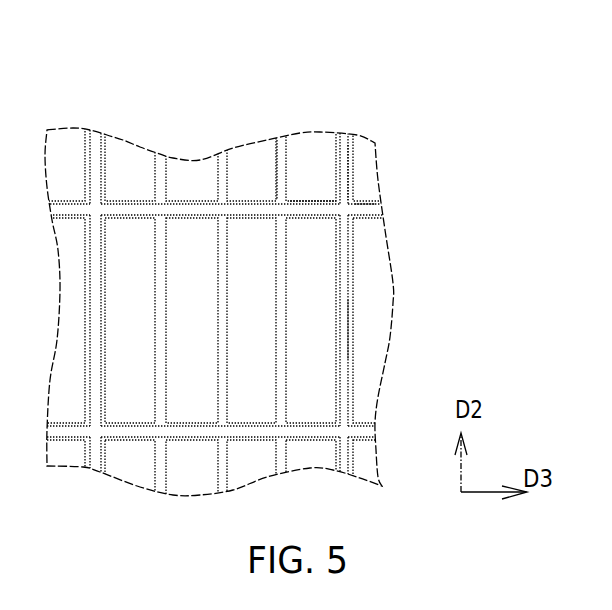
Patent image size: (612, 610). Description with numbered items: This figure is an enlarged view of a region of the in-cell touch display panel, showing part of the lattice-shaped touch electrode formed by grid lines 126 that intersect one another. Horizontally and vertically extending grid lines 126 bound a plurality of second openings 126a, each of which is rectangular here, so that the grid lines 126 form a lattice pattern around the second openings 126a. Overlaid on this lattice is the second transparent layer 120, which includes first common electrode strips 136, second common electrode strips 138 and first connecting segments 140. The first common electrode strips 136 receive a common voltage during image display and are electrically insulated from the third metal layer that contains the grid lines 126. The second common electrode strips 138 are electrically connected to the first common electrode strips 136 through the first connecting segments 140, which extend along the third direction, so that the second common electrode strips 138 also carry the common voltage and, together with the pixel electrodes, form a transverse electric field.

The second transparent layer 120 is at (378, 83).
The grid lines 126 is at (215, 310).
The second opening 126a is at (283, 323).
The first common electrode strip 136 is at (280, 138).
The second common electrode strip 138 is at (350, 164).
The first connecting segment 140 is at (311, 199).